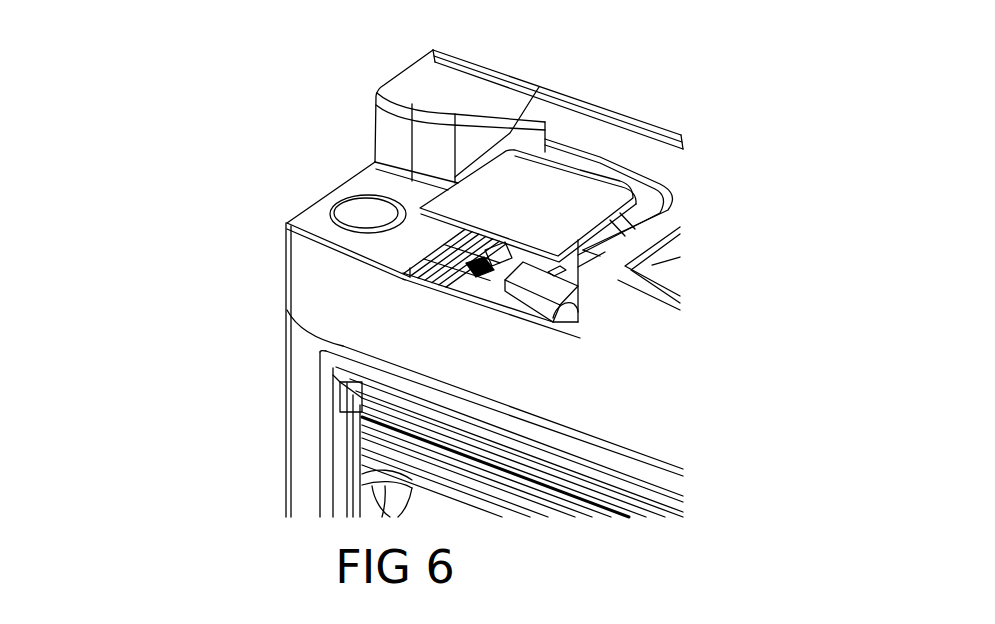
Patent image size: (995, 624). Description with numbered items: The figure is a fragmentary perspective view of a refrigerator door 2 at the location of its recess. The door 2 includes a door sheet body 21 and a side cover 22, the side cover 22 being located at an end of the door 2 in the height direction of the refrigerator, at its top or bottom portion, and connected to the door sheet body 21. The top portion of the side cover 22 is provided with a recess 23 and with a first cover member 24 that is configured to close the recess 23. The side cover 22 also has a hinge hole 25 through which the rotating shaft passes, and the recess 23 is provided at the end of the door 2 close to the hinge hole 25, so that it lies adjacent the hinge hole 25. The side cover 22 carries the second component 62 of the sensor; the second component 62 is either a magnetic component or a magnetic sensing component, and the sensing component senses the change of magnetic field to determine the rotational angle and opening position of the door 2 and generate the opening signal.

The door 2 is at (162, 270).
The door sheet body 21 is at (303, 430).
The side cover 22 is at (312, 270).
The recess 23 is at (559, 270).
The first cover member 24 is at (512, 178).
The hinge hole 25 is at (366, 212).
The second component 62 is at (501, 289).